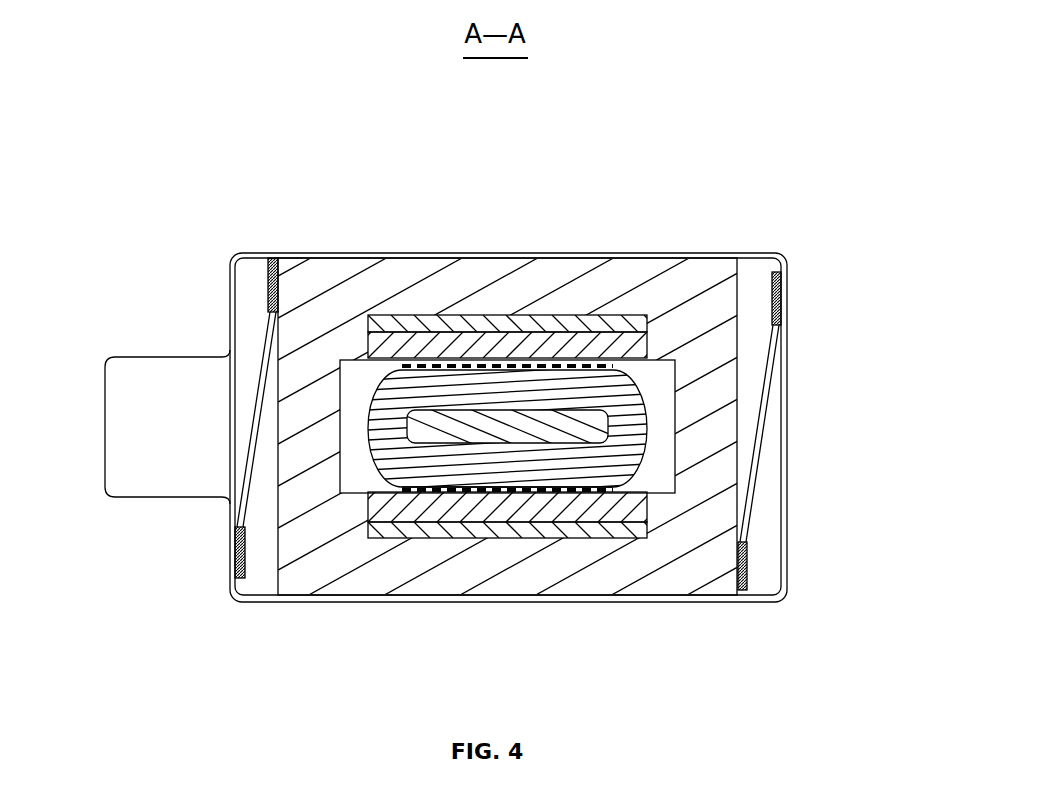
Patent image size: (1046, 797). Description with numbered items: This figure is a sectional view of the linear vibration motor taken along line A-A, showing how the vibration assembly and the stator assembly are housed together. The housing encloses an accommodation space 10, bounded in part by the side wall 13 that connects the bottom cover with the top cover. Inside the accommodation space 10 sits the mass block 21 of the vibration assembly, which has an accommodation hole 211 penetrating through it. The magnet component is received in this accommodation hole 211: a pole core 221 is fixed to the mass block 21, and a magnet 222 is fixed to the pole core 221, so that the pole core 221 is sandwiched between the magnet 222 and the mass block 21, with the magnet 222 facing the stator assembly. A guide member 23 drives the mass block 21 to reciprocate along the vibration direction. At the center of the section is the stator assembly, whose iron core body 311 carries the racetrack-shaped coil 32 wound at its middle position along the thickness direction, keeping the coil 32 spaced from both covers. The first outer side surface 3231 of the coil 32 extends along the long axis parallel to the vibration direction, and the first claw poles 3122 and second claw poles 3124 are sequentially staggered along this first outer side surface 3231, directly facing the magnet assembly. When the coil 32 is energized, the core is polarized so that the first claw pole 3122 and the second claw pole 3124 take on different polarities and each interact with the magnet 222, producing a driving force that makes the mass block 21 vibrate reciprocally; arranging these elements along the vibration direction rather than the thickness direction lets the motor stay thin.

The accommodation space 10 is at (250, 289).
The side wall 13 is at (233, 323).
The mass block 21 is at (367, 292).
The accommodation hole 211 is at (658, 442).
The pole core 221 is at (428, 322).
The magnet 222 is at (497, 340).
The guide member 23 is at (748, 476).
The coil 32 is at (592, 380).
The iron core body 311 is at (420, 433).
The first outer side surface 3231 is at (430, 505).
The second claw pole 3124 is at (560, 488).
The first claw pole 3122 is at (607, 487).